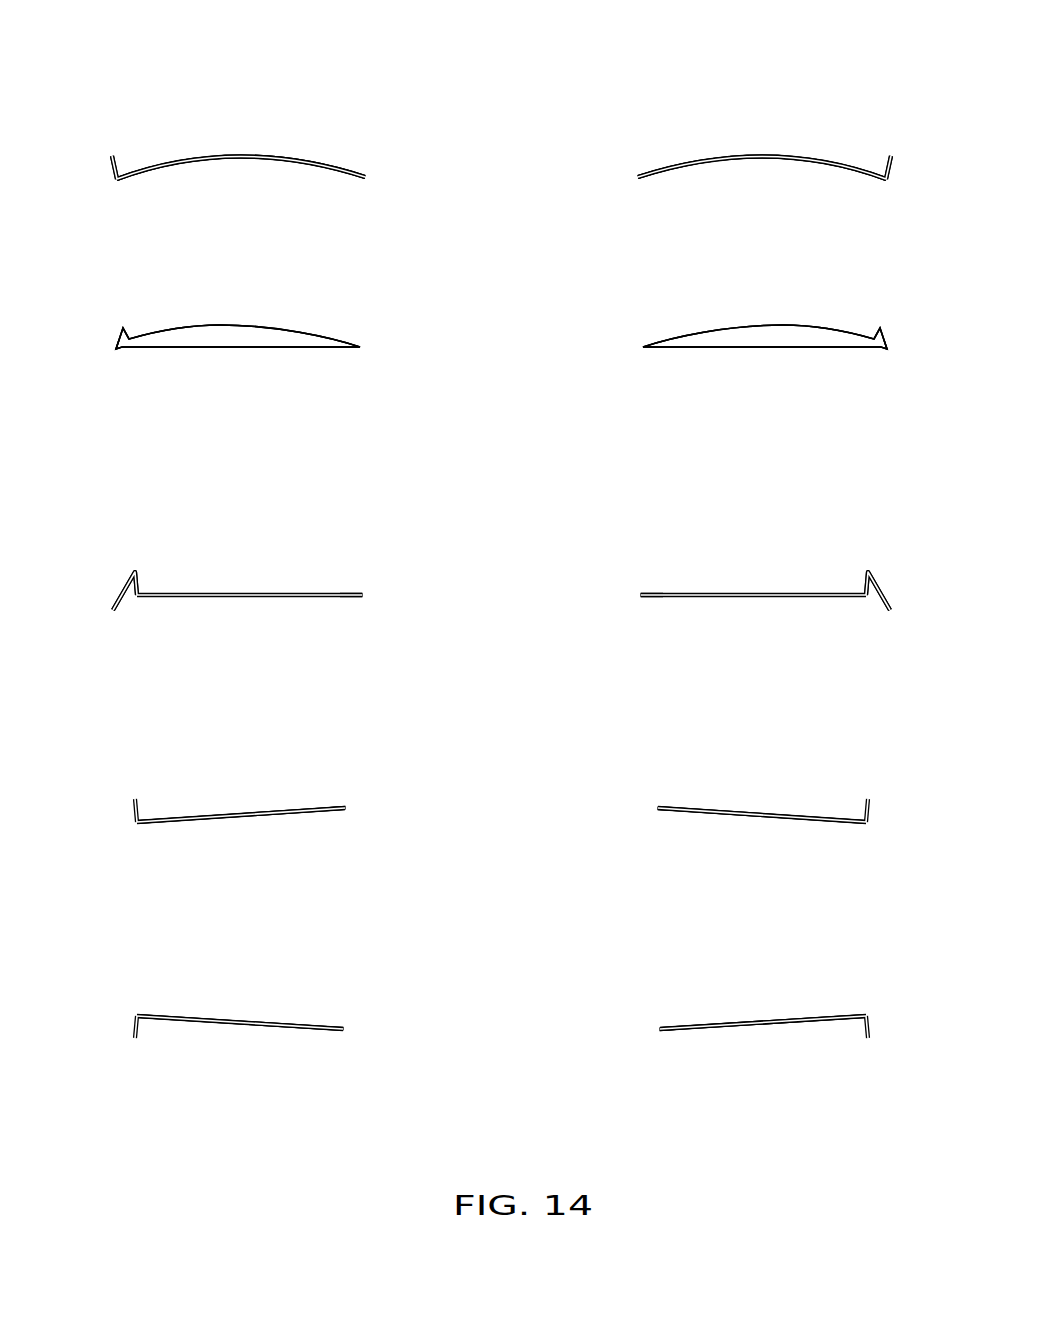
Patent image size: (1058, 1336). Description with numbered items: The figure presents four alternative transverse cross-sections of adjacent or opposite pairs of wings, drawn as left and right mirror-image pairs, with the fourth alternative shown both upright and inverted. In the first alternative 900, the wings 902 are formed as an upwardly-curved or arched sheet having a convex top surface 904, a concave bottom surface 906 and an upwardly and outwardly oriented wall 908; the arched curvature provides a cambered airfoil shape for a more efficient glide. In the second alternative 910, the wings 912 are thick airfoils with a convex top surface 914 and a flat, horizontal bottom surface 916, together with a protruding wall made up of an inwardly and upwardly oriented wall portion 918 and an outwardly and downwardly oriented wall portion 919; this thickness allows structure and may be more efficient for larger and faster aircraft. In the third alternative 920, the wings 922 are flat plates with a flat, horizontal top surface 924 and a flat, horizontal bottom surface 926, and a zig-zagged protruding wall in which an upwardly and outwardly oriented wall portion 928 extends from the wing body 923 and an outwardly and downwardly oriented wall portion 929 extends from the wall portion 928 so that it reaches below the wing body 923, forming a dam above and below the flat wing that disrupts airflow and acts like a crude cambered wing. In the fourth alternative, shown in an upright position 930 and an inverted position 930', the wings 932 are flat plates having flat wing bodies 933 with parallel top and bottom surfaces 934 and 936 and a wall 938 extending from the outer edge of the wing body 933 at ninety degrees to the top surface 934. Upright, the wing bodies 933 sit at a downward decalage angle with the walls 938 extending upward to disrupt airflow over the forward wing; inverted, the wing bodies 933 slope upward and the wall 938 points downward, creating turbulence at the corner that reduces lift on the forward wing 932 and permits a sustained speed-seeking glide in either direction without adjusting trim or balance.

The first alternative 900 is at (868, 105).
The wings 902 is at (370, 150).
The convex top surface 904 is at (232, 155).
The concave bottom surface 906 is at (305, 162).
The upwardly and outwardly oriented wall 908 is at (116, 172).
The second alternative 910 is at (868, 300).
The wings 912 is at (358, 330).
The convex top surface 914 is at (232, 325).
The flat, horizontal bottom surface 916 is at (298, 348).
The inwardly and upwardly oriented wall portion 918 is at (122, 328).
The outwardly and downwardly oriented wall portion 919 is at (116, 350).
The third alternative 920 is at (868, 505).
The wings 922 is at (338, 582).
The wing body 923 is at (307, 598).
The flat, horizontal top surface 924 is at (223, 592).
The flat, horizontal bottom surface 926 is at (202, 598).
The upwardly and outwardly oriented wall portion 928 is at (142, 582).
The outwardly and downwardly oriented wall portion 929 is at (118, 600).
The upright position 930 is at (543, 755).
The inverted position 930' is at (546, 979).
The wings 932 is at (313, 780).
The wing body 933 is at (330, 808).
The top surface 934 is at (282, 808).
The bottom surface 936 is at (312, 814).
The wall 938 is at (133, 802).